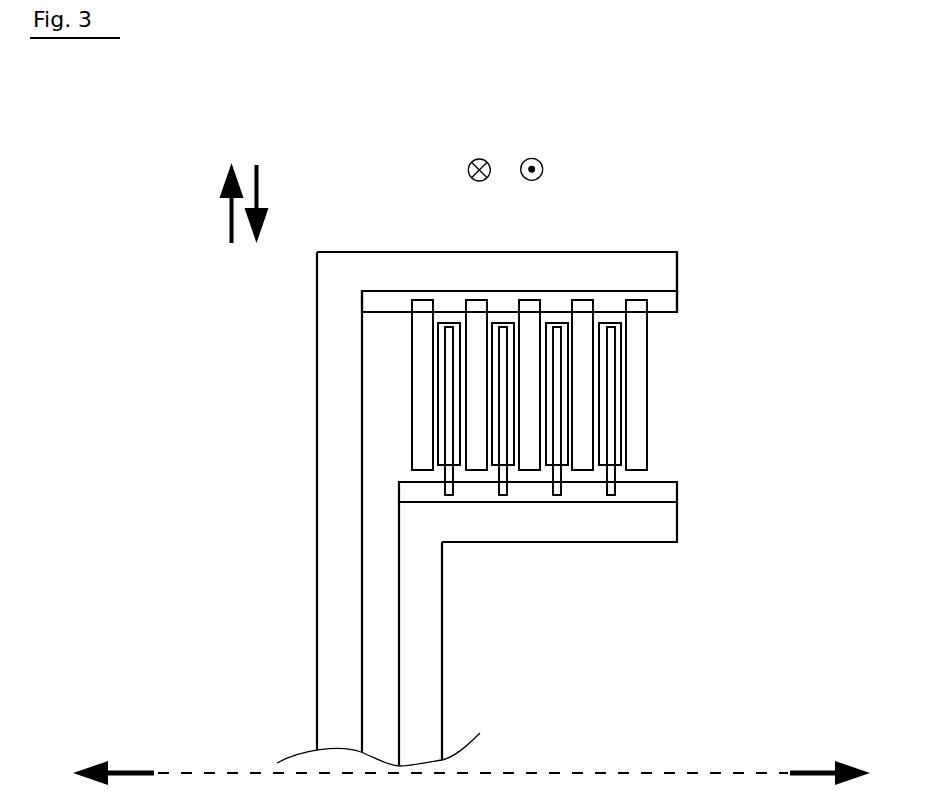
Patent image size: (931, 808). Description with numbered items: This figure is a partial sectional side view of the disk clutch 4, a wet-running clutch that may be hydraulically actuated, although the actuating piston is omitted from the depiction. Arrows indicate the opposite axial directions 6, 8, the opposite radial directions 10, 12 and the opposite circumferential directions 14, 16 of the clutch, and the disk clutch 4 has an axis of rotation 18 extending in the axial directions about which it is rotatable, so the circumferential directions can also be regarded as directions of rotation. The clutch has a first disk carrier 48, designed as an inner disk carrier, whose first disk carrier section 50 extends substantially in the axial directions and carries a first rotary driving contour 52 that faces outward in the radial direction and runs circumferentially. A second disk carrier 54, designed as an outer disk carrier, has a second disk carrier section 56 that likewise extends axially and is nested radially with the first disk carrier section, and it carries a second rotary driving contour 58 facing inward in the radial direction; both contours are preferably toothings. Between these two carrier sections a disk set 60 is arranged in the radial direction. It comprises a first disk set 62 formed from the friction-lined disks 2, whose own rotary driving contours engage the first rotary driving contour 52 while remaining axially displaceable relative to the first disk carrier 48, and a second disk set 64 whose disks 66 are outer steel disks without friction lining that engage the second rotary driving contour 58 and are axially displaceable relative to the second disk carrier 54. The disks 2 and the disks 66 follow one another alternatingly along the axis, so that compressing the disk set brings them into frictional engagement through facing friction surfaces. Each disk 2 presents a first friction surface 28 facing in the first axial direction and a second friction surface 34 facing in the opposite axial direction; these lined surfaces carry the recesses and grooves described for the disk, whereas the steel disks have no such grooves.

The disk 2 is at (450, 497).
The disk clutch 4 is at (742, 236).
The axial direction 6 is at (126, 770).
The axial direction 8 is at (808, 770).
The radial direction 10 is at (228, 214).
The radial direction 12 is at (262, 189).
The circumferential direction 14 is at (543, 162).
The circumferential direction 16 is at (468, 165).
The axis of rotation 18 is at (207, 770).
The first friction surface 28 is at (597, 343).
The second friction surface 34 is at (460, 335).
The first disk carrier 48 is at (452, 652).
The first disk carrier section 50 is at (658, 527).
The first rotary driving contour 52 is at (665, 491).
The second disk carrier 54 is at (310, 645).
The second disk carrier section 56 is at (662, 268).
The second rotary driving contour 58 is at (667, 302).
The disk set 60 is at (662, 377).
The first disk set 62 is at (622, 503).
The second disk set 64 is at (406, 302).
The disk 66 is at (423, 320).